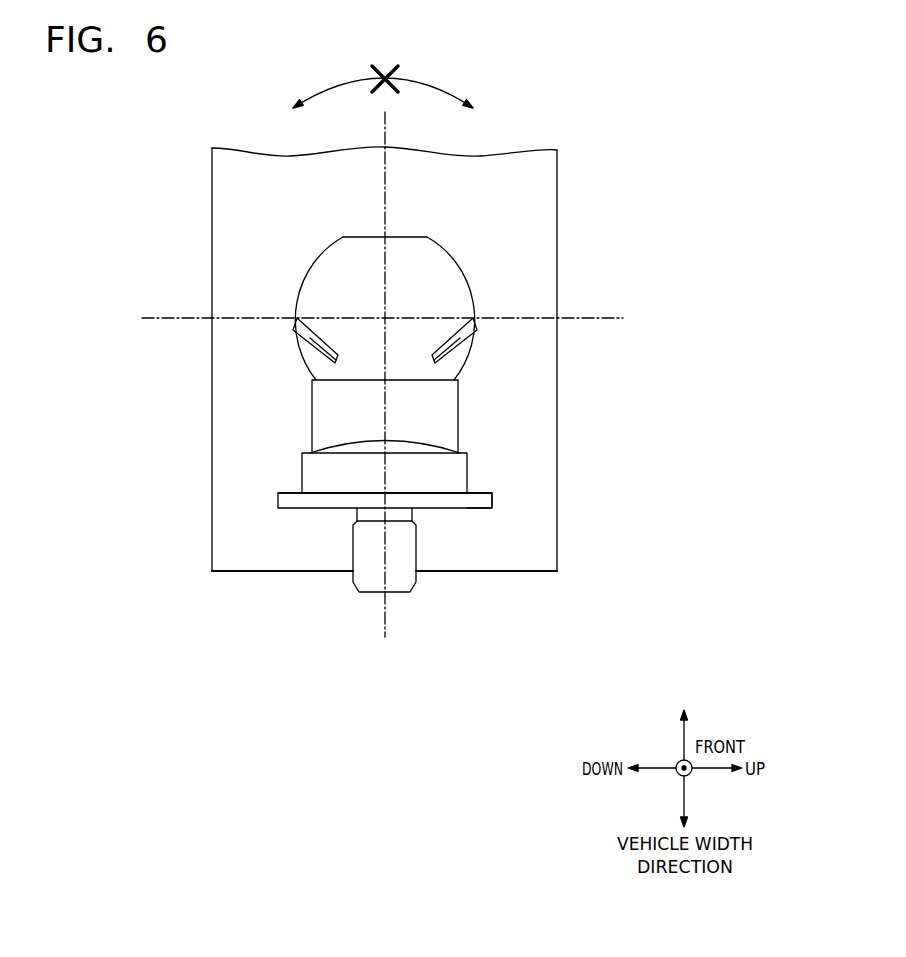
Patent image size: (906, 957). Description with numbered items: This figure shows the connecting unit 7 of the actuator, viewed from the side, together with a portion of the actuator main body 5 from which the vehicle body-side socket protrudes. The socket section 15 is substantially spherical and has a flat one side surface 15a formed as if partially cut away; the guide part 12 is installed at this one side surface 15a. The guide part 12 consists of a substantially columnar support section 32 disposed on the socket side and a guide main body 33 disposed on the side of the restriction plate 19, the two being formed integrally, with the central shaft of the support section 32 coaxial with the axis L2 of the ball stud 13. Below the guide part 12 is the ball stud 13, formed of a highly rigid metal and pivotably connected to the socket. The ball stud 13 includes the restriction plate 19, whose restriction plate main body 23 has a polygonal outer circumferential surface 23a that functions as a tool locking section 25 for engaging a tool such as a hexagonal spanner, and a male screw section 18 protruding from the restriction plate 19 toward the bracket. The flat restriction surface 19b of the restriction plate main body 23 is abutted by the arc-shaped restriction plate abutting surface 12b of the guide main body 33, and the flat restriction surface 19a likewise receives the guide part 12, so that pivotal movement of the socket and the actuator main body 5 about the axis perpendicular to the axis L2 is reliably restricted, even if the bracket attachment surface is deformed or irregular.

The actuator main body 5 is at (557, 183).
The connecting unit 7 is at (509, 273).
The guide part 12 is at (137, 397).
The ball stud 13 is at (384, 567).
The socket section 15 is at (313, 268).
The one side surface 15a is at (457, 398).
The male screw section 18 is at (415, 552).
The restriction plate 19 is at (478, 472).
The restriction surface 19a is at (458, 508).
The restriction surface 19b is at (460, 452).
The restriction plate main body 23 is at (345, 477).
The outer circumferential surface 23a is at (318, 478).
The tool locking section 25 is at (362, 580).
The support section 32 is at (395, 398).
The guide main body 33 is at (382, 423).
The restriction plate abutting surface 12b is at (407, 452).
The axis L2 is at (384, 604).